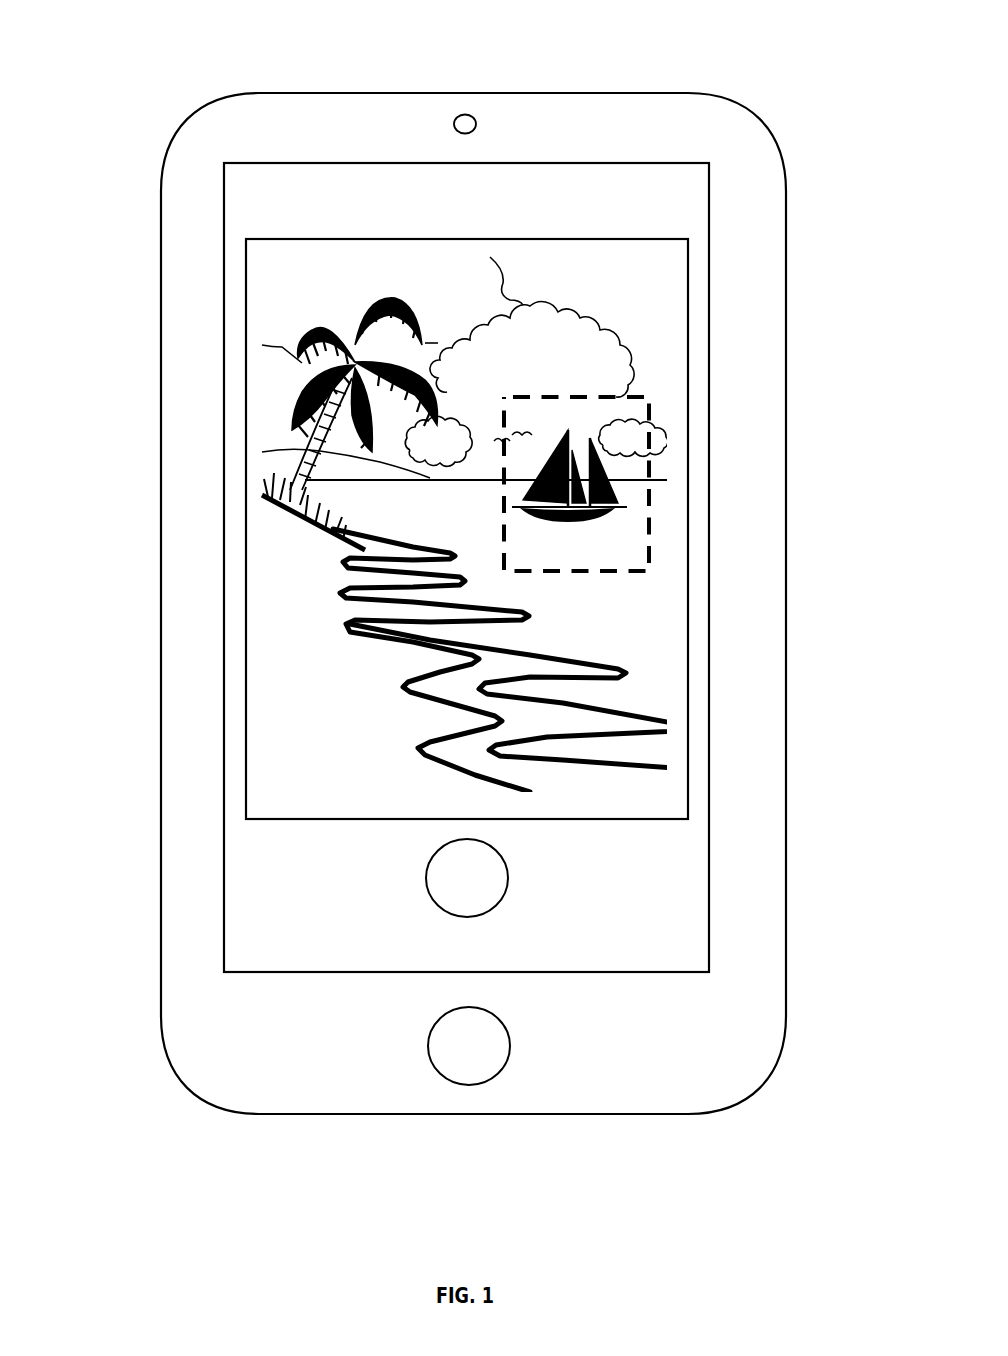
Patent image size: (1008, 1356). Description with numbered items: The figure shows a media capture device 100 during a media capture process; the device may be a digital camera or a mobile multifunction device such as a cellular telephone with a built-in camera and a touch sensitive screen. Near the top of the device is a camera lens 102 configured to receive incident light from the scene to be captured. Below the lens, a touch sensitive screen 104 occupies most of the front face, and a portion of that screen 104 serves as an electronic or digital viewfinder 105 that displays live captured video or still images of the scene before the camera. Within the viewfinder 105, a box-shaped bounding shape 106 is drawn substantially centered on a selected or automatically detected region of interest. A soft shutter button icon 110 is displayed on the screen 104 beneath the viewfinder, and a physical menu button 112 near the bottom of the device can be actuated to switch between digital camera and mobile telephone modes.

The media capture device 100 is at (161, 742).
The camera lens 102 is at (465, 114).
The touch sensitive screen 104 is at (710, 278).
The viewfinder 105 is at (688, 386).
The bounding shape 106 is at (649, 497).
The shutter button icon 110 is at (510, 876).
The physical menu button 112 is at (511, 1044).